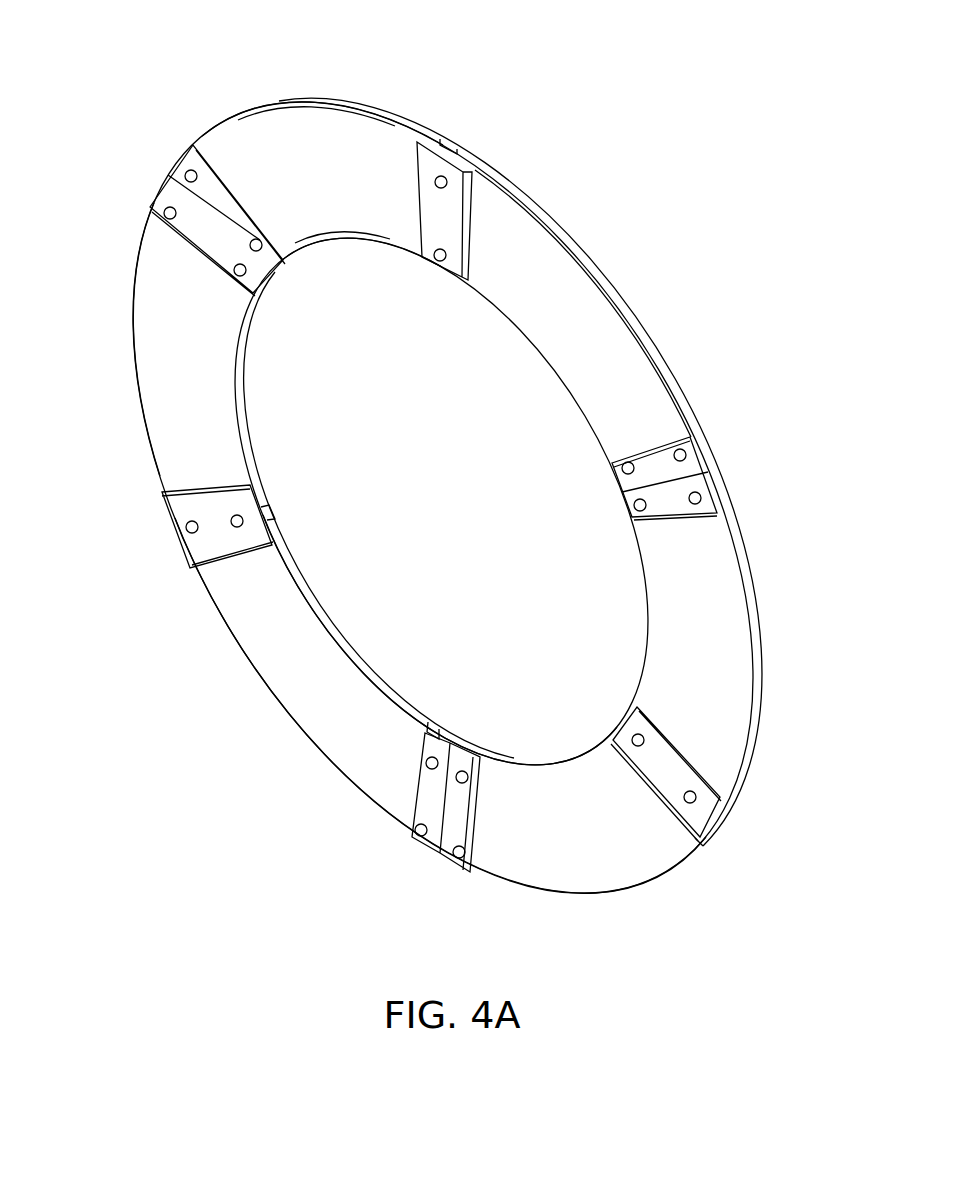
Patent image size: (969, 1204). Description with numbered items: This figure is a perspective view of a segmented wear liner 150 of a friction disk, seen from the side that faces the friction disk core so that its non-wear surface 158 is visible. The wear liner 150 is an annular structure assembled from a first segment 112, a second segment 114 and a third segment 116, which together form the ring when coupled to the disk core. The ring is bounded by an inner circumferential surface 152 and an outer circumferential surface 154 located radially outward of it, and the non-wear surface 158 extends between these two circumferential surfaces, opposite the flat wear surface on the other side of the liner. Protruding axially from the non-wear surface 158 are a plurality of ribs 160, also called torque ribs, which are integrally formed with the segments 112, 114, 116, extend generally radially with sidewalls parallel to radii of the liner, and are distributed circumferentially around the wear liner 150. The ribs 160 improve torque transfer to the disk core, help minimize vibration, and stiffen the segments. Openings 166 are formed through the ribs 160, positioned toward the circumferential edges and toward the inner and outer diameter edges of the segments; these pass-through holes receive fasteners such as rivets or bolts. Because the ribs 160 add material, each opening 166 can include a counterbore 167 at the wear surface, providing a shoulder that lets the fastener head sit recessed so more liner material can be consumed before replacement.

The wear liner 150 is at (113, 88).
The first segment 112 is at (277, 672).
The second segment 114 is at (305, 125).
The third segment 116 is at (652, 850).
The inner circumferential surface 152 is at (381, 683).
The outer circumferential surface 154 is at (388, 117).
The non-wear surface 158 is at (210, 387).
The ribs 160 is at (440, 203).
The openings 166 is at (267, 243).
The counterbore 167 is at (449, 143).